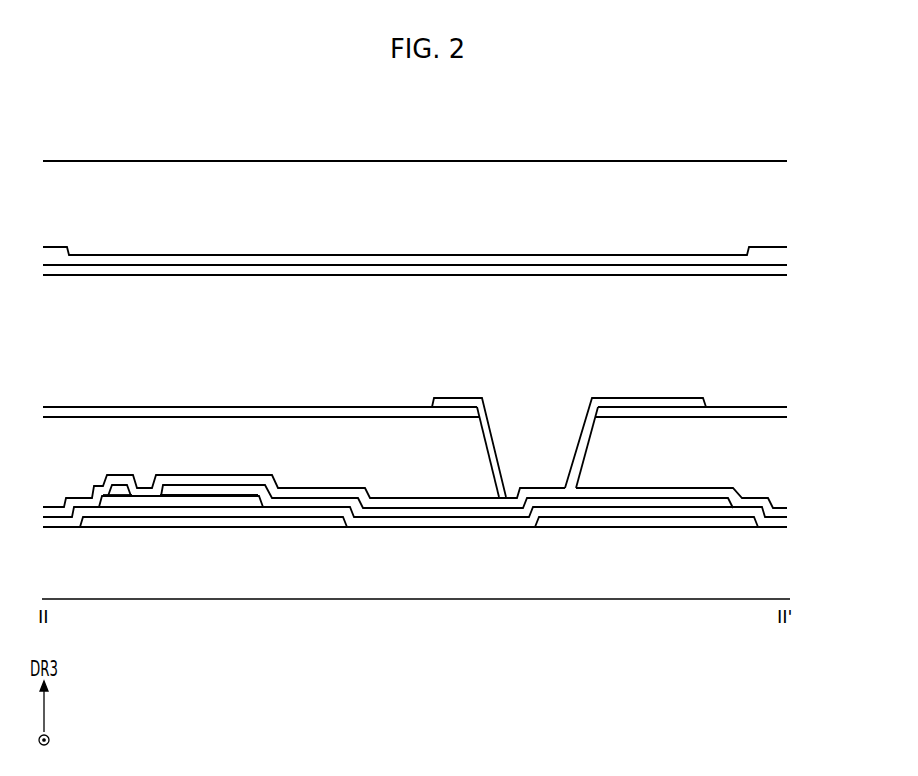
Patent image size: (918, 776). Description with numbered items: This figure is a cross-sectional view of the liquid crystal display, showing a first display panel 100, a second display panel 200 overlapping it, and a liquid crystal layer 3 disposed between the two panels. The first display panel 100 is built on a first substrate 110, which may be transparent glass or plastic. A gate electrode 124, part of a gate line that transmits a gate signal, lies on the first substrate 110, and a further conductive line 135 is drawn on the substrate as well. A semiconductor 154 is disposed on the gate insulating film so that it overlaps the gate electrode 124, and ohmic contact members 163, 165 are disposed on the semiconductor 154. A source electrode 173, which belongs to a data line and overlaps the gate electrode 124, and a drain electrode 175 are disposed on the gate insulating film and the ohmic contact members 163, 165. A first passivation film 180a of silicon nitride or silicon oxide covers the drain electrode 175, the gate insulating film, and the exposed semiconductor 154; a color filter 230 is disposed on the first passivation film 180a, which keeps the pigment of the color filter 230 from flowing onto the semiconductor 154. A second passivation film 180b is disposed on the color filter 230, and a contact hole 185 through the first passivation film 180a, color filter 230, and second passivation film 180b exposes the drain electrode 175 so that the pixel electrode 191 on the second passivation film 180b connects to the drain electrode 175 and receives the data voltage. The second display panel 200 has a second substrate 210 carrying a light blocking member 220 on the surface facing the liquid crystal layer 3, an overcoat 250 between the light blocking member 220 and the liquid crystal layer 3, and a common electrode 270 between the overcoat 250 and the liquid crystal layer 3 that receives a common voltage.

The liquid crystal layer 3 is at (795, 277).
The first display panel 100 is at (442, 380).
The first substrate 110 is at (513, 588).
The gate electrode 124 is at (276, 521).
The storage electrode line 135 is at (556, 522).
The semiconductor 154 is at (187, 504).
The ohmic contact member 163 is at (110, 487).
The ohmic contact member 165 is at (226, 497).
The source electrode 173 is at (123, 492).
The drain electrode 175 is at (393, 510).
The first passivation film 180a is at (328, 495).
The second passivation film 180b is at (718, 415).
The contact hole 185 is at (495, 443).
The pixel electrode 191 is at (615, 403).
The second display panel 200 is at (442, 194).
The second substrate 210 is at (213, 172).
The light blocking member 220 is at (290, 253).
The color filter 230 is at (462, 483).
The overcoat 250 is at (363, 263).
The common electrode 270 is at (441, 273).